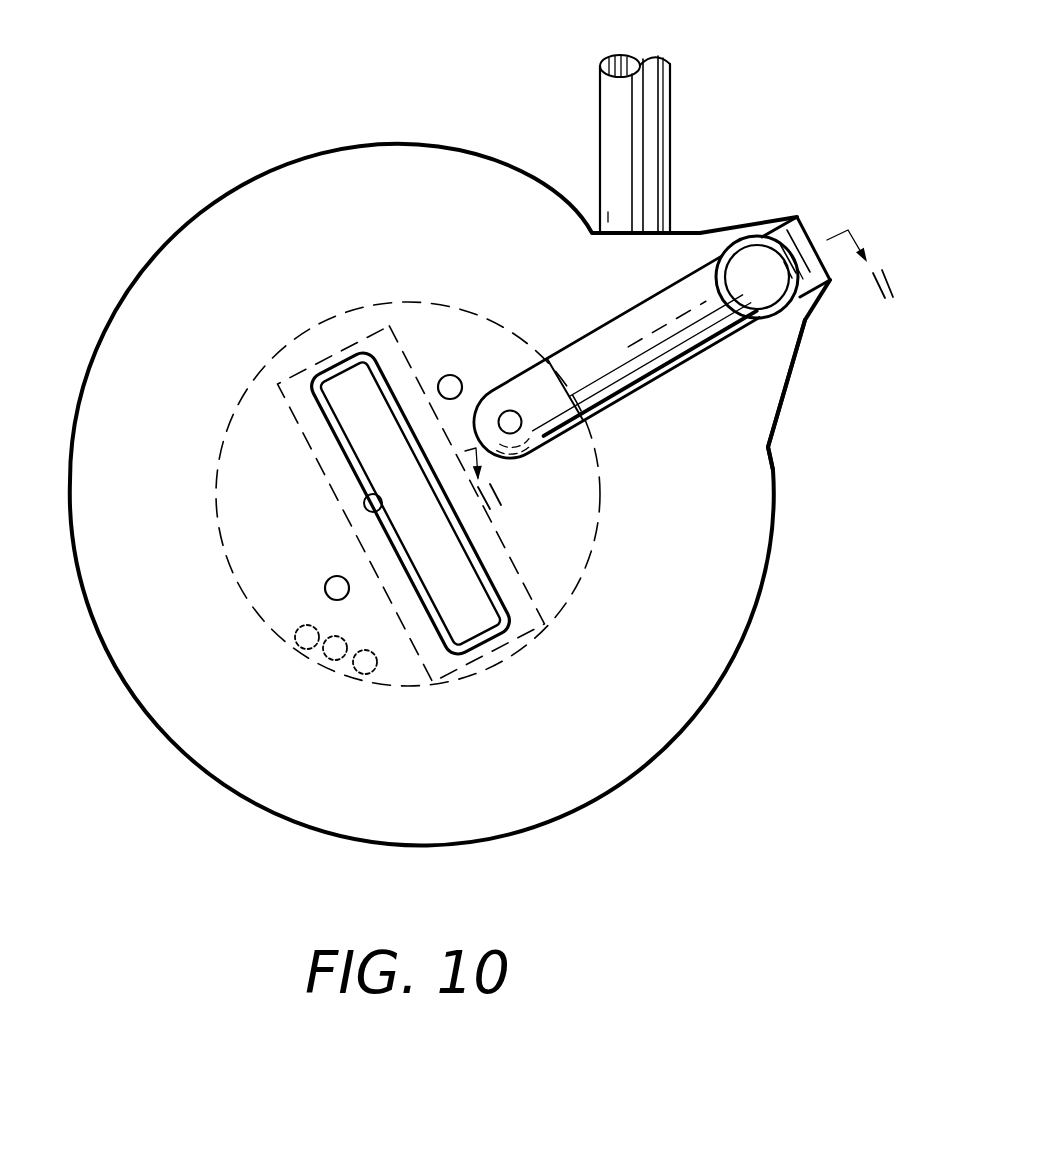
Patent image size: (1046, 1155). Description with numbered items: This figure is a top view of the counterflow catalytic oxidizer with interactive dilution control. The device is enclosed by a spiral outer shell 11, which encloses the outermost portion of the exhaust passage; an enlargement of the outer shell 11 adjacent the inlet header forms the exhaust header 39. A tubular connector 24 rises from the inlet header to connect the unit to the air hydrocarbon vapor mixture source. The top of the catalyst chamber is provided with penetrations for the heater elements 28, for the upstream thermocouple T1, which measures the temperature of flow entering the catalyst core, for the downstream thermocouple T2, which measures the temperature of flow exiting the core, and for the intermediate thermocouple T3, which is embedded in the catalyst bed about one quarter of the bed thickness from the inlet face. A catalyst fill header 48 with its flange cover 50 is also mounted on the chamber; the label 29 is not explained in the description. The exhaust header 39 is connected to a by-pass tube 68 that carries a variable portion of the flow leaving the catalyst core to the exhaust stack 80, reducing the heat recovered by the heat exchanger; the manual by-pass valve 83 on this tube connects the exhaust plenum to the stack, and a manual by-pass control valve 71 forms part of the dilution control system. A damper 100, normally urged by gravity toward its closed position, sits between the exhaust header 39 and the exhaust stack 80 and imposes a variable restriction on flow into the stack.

The outer shell 11 is at (748, 642).
The tubular connector 24 is at (664, 52).
The heater elements 28 is at (328, 660).
The plate 29 is at (252, 730).
The exhaust header 39 is at (753, 393).
The catalyst fill header 48 is at (368, 443).
The flange cover 50 is at (368, 408).
The by-pass tube 68 is at (612, 378).
The manual by-pass control valve 71 is at (523, 432).
The exhaust stack 80 is at (750, 262).
The manual by-pass valve 83 is at (654, 413).
The damper 100 is at (780, 318).
The upstream thermocouple T1 is at (325, 589).
The downstream thermocouple T2 is at (448, 375).
The intermediate thermocouple T3 is at (376, 494).